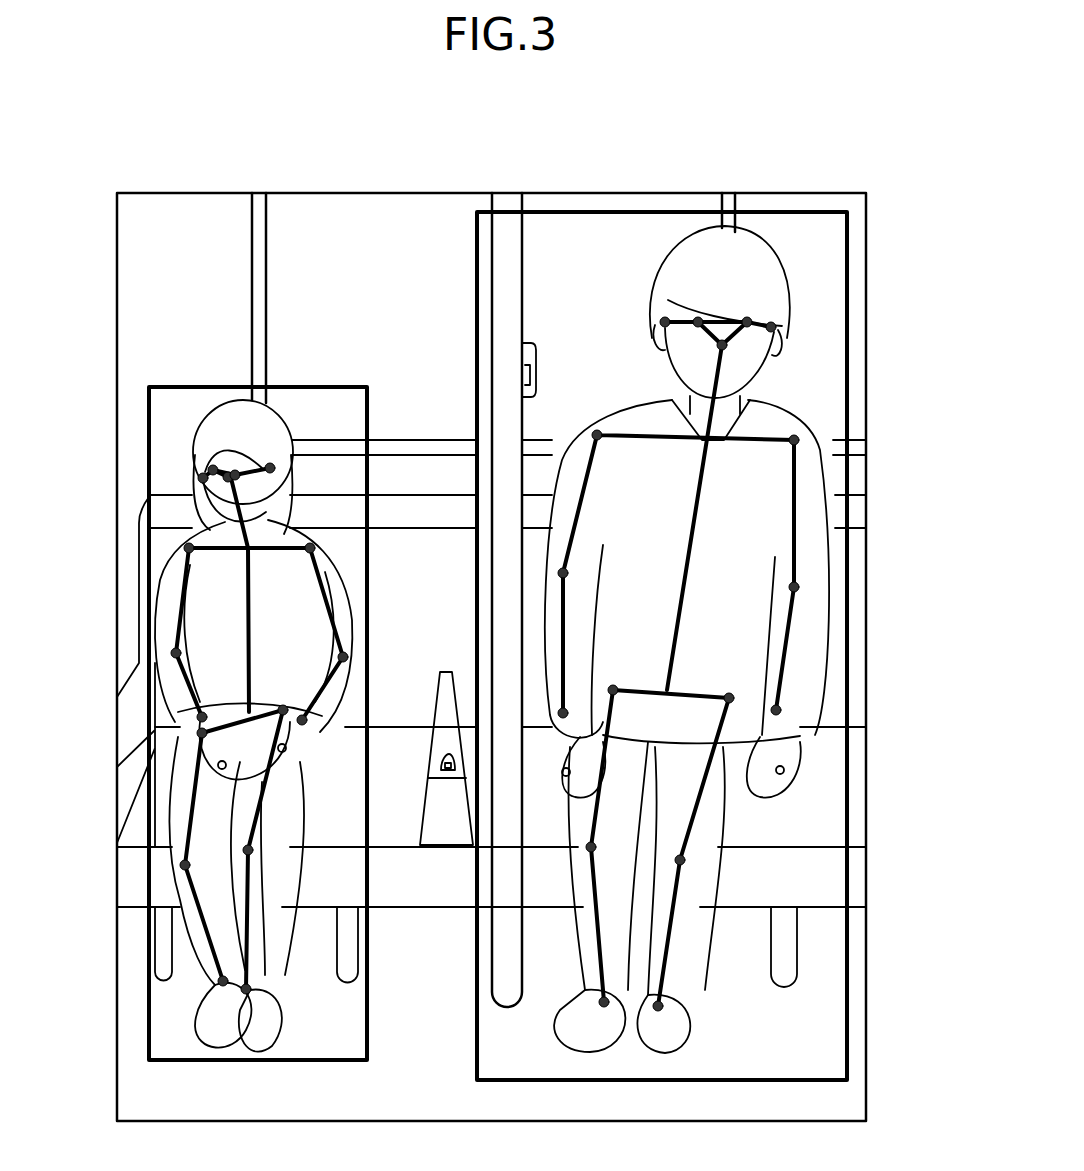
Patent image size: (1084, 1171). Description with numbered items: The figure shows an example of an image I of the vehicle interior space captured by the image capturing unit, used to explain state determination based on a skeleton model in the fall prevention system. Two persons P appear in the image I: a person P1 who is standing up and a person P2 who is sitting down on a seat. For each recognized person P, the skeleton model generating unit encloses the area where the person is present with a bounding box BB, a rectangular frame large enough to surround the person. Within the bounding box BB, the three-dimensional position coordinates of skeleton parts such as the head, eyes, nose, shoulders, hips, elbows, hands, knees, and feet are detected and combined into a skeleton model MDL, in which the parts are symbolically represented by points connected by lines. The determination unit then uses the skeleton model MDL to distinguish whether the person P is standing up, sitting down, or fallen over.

The image I is at (770, 151).
The person P is at (492, 576).
The person (standing up) P1 is at (656, 260).
The person (sitting down) P2 is at (287, 413).
The bounding box BB is at (149, 478).
The skeleton model MDL is at (180, 558).